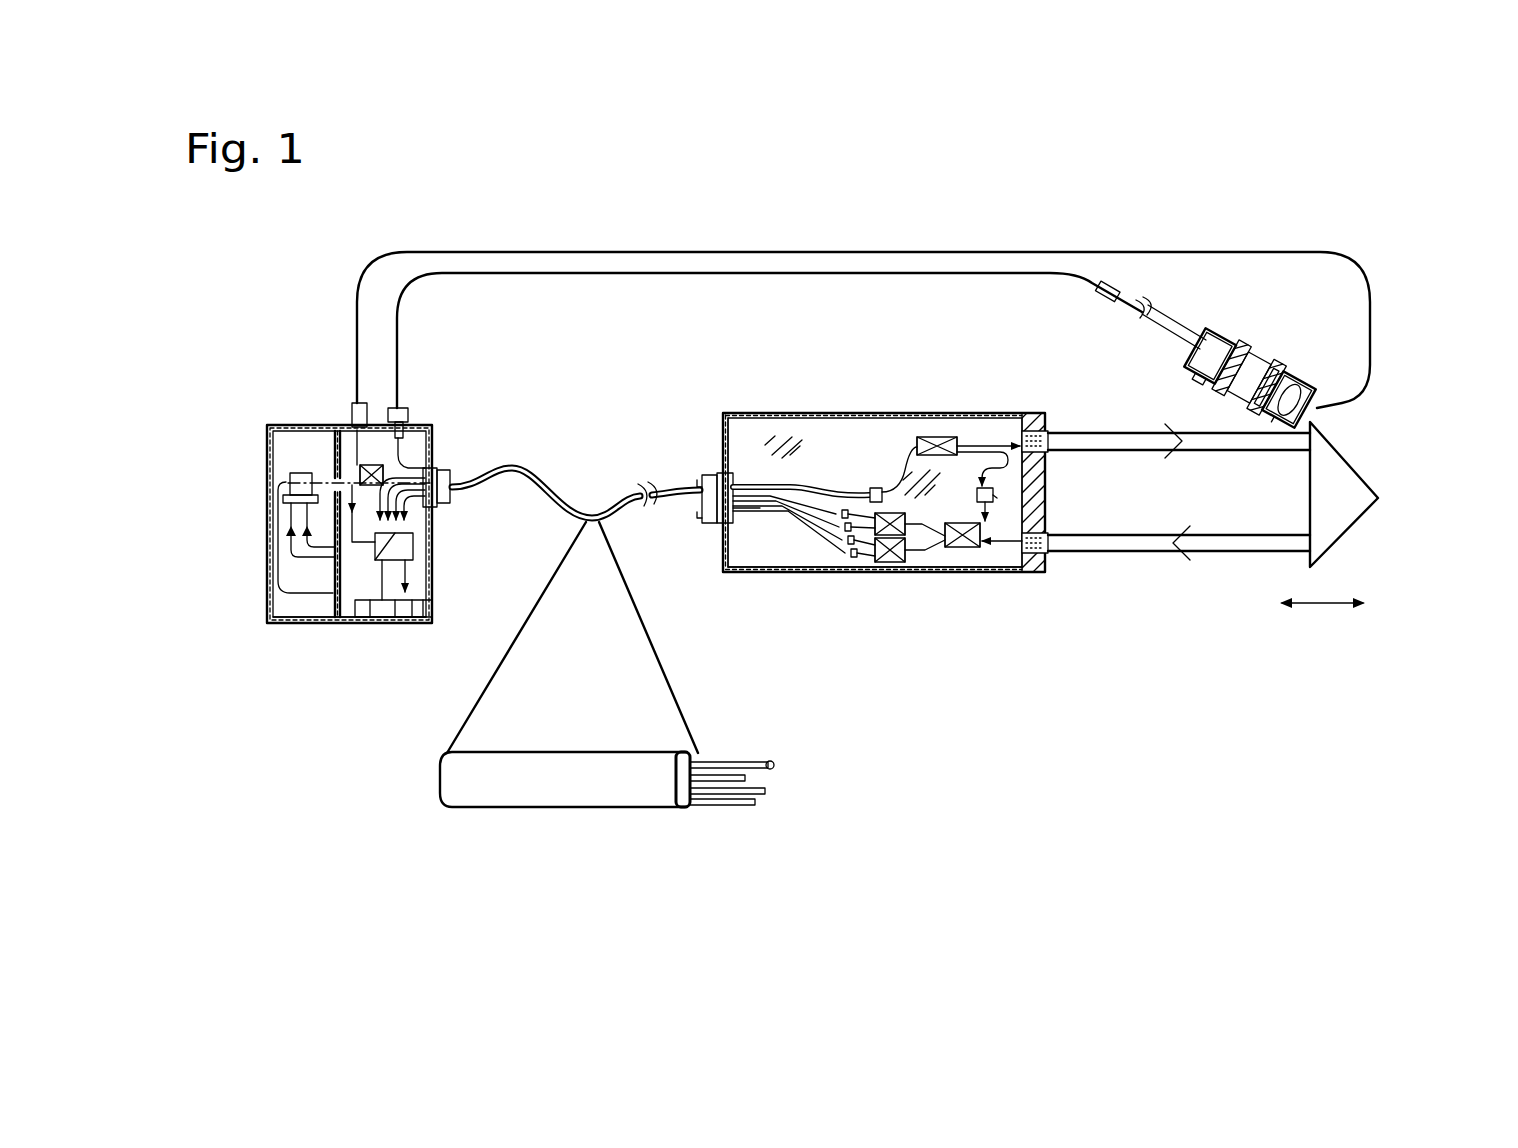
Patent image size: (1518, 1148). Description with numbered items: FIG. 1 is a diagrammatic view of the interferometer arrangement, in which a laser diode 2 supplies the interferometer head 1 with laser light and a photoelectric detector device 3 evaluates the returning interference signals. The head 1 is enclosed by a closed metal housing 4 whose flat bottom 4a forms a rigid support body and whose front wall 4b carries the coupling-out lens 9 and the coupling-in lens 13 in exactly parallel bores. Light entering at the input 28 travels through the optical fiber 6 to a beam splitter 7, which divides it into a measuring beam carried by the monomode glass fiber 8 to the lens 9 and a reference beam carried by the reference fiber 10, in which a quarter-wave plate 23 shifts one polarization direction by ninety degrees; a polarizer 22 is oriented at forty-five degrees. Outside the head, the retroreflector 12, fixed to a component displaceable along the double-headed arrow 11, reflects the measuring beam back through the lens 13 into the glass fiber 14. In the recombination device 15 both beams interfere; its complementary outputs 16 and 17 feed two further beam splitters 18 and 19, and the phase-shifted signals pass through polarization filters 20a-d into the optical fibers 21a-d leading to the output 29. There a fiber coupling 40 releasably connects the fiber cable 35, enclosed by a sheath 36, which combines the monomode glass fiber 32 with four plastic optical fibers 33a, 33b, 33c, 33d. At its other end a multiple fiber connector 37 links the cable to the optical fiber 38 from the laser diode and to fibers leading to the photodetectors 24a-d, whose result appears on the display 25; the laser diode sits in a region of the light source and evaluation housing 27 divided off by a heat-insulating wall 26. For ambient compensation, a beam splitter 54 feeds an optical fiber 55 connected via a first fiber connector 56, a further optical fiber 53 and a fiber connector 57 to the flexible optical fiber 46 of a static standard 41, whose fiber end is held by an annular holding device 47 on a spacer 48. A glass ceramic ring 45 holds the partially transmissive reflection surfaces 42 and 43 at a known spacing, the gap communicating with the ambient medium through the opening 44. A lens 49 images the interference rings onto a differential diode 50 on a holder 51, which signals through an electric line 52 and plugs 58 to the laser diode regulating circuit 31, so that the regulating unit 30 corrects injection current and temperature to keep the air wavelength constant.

The interferometer head 1 is at (872, 582).
The laser diode 2 is at (297, 478).
The photoelectric detector device 3 is at (422, 552).
The housing 4 is at (788, 417).
The flat bottom 4a is at (833, 447).
The front wall 4b is at (1053, 485).
The flexible optical fiber 6 is at (752, 478).
The beam splitter 7 is at (925, 437).
The monomode glass fiber 8 is at (972, 455).
The coupling-out lens 9 is at (1042, 435).
The reference fiber 10 is at (983, 486).
The double-headed arrow 11 is at (1330, 603).
The retroreflector 12 is at (1347, 533).
The coupling-in lens 13 is at (1047, 553).
The glass fiber 14 is at (985, 535).
The recombination device 15 is at (958, 548).
The complementary output 16 is at (905, 557).
The complementary output 17 is at (935, 548).
The beam splitter 18 is at (878, 548).
The beam splitter 19 is at (878, 562).
The polarization filters 20a-d is at (847, 518).
The flexible optical fibers 21a-d is at (782, 500).
The polarizer 22 is at (872, 488).
The quarter-wave plate 23 is at (997, 498).
The photodetectors 24a-d is at (423, 527).
The display 25 is at (393, 613).
The heat-insulating wall 26 is at (322, 602).
The light source and evaluation housing 27 is at (335, 603).
The input 28 is at (742, 465).
The output 29 is at (715, 512).
The regulating unit 30 is at (380, 552).
The laser diode regulating circuit 31 is at (267, 502).
The flexible monomode glass fiber 32 is at (770, 788).
The plastic optical fiber 33a is at (728, 767).
The plastic optical fiber 33b is at (760, 768).
The plastic optical fiber 33c is at (715, 802).
The plastic optical fiber 33d is at (730, 803).
The fiber cable 35 is at (527, 456).
The sheath 36 is at (542, 787).
The multiple fiber connector 37 is at (443, 460).
The optical fiber 38 is at (445, 465).
The fiber coupling 40 is at (710, 466).
The static standard 41 is at (1290, 362).
The partially transmissive reflection surface 42 is at (1275, 335).
The partially transmissive reflection surface 43 is at (1370, 295).
The opening 44 is at (1225, 388).
The ring 45 is at (1262, 340).
The flexible optical fiber 46 is at (1170, 335).
The annular holding device 47 is at (1200, 335).
The spacer 48 is at (1228, 333).
The lens 49 is at (1300, 398).
The differential diode 50 is at (1320, 405).
The holder 51 is at (1300, 378).
The electric line 52 is at (357, 283).
The further optical fiber 53 is at (475, 273).
The beam splitter 54 is at (380, 477).
The optical fiber 55 is at (405, 460).
The first fiber connector 56 is at (360, 403).
The fiber connector 57 is at (1107, 285).
The plugs 58 is at (393, 413).